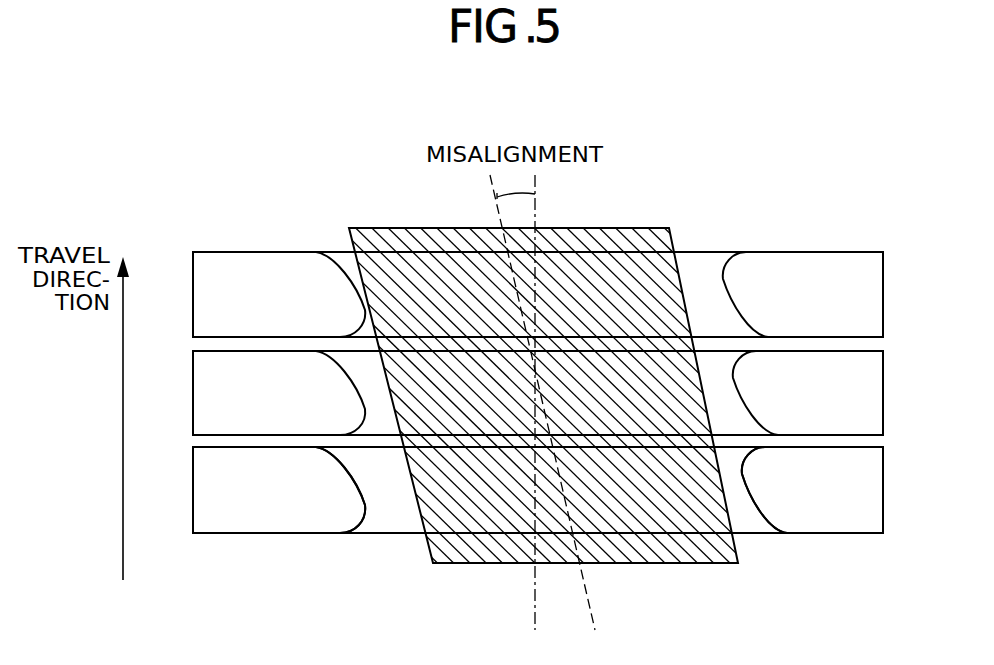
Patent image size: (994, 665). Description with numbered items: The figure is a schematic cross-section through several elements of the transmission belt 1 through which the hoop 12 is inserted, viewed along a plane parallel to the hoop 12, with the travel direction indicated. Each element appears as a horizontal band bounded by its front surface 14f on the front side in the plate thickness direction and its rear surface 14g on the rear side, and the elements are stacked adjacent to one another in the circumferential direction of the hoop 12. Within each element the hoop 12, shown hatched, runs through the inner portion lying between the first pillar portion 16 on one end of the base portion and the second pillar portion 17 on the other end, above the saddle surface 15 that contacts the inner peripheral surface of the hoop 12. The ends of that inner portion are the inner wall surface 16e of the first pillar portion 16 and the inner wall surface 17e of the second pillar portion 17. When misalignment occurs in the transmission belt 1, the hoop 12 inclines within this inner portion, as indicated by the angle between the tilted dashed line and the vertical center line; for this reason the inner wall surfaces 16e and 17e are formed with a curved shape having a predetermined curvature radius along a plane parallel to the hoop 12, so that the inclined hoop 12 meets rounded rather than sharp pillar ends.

The transmission belt 1 is at (728, 168).
The hoop 12 is at (455, 522).
The front surface 14f is at (315, 252).
The rear surface 14g is at (290, 533).
The saddle surface 15 is at (398, 518).
The first pillar portion 16 is at (200, 294).
The inner wall surface of the first pillar portion 16e is at (363, 513).
The second pillar portion 17 is at (870, 290).
The inner wall surface of the second pillar portion 17e is at (746, 500).